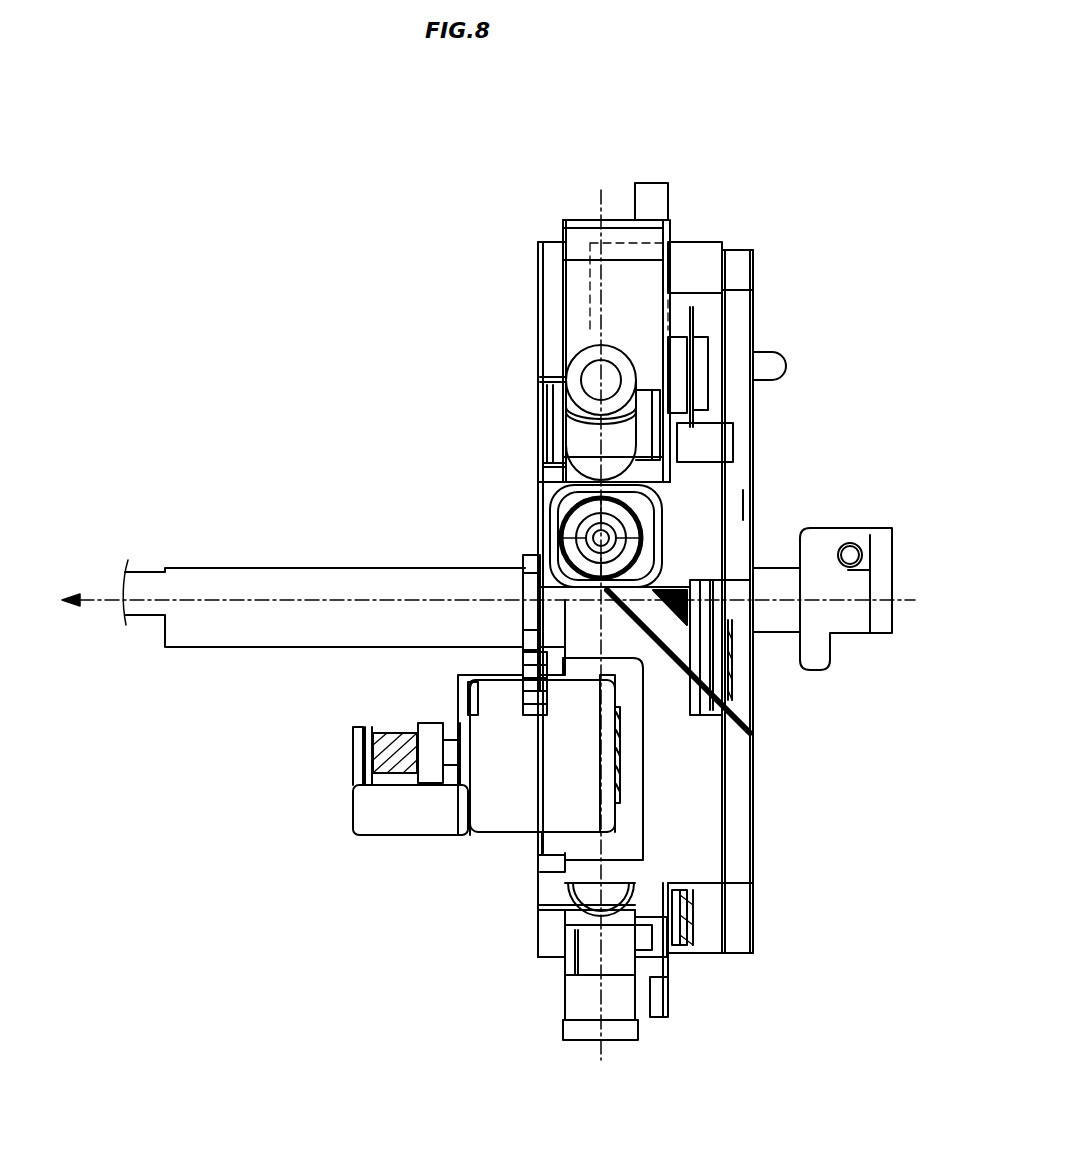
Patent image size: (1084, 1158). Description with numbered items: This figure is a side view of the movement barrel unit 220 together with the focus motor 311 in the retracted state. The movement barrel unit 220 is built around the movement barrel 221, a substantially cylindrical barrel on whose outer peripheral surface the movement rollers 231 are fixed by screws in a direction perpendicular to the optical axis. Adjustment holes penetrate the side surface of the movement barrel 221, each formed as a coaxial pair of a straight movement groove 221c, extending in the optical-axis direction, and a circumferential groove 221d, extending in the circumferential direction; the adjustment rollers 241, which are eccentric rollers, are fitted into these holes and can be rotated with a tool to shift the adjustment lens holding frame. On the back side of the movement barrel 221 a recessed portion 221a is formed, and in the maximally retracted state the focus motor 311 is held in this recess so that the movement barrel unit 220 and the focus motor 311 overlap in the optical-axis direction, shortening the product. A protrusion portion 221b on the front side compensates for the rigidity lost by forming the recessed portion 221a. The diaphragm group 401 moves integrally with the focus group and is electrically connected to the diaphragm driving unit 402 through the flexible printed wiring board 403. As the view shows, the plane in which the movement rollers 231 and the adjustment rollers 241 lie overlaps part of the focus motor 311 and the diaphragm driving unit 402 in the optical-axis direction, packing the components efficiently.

The movement barrel unit 220 is at (768, 155).
The movement barrel 221 is at (580, 297).
The recessed portion 221a is at (645, 783).
The protrusion portion 221b is at (755, 795).
The straight movement groove 221c is at (612, 596).
The circumferential groove 221d is at (745, 505).
The movement rollers 231 is at (580, 360).
The adjustment rollers 241 is at (575, 520).
The focus motor 311 is at (497, 707).
The diaphragm group 401 is at (693, 258).
The diaphragm driving unit 402 is at (620, 255).
The flexible printed wiring board 403 is at (322, 585).